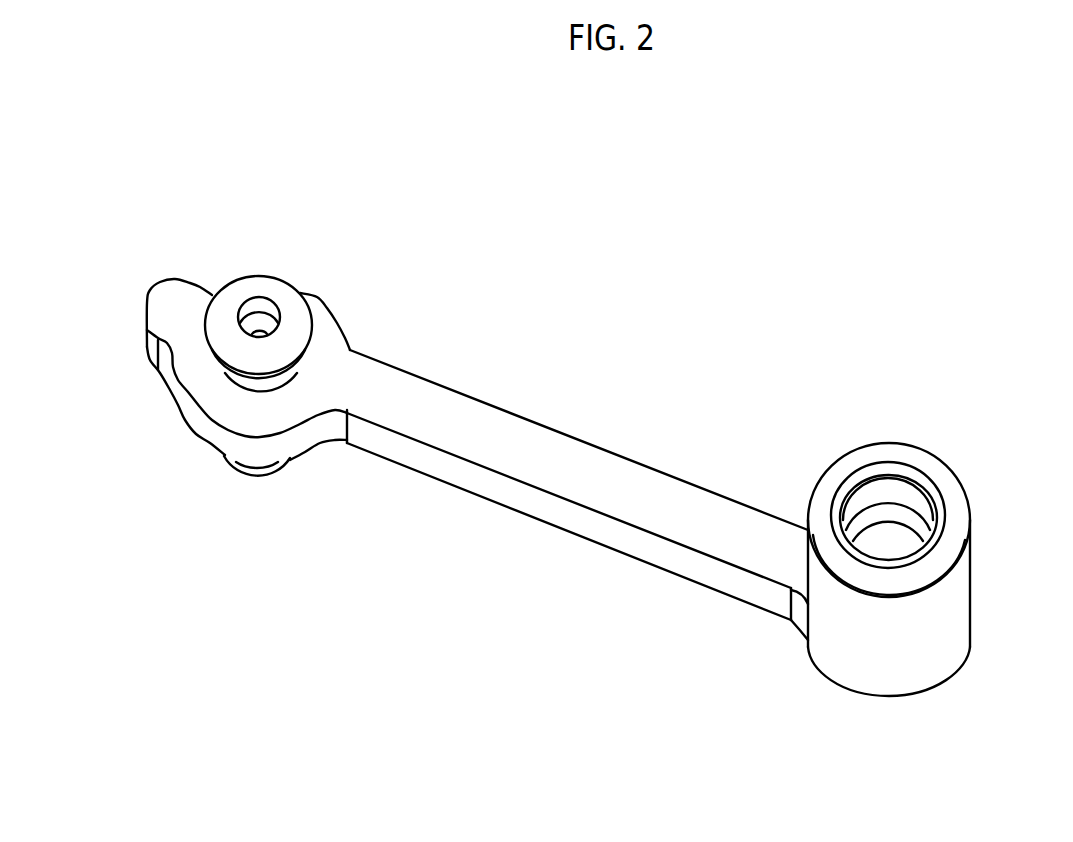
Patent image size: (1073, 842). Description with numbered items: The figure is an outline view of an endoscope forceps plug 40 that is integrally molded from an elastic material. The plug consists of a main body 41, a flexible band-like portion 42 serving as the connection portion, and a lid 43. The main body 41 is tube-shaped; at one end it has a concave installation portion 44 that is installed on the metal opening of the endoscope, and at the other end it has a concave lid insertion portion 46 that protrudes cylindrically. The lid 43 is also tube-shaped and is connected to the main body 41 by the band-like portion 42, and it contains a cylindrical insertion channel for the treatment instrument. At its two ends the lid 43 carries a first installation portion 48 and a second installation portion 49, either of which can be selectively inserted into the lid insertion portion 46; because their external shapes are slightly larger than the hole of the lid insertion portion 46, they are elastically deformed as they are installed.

The endoscope forceps plug 40 is at (734, 377).
The main body 41 is at (963, 617).
The band-like portion 42 is at (678, 563).
The lid 43 is at (220, 293).
The installation portion 44 is at (850, 688).
The lid insertion portion 46 is at (905, 548).
The first installation portion 48 is at (292, 318).
The second installation portion 49 is at (255, 479).